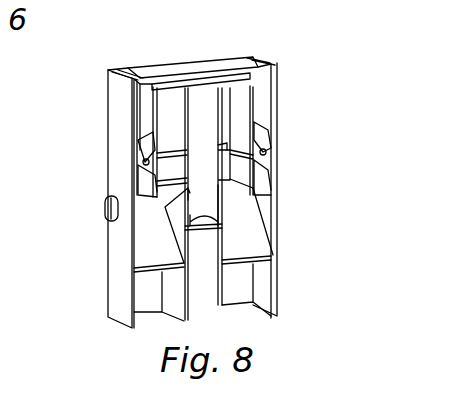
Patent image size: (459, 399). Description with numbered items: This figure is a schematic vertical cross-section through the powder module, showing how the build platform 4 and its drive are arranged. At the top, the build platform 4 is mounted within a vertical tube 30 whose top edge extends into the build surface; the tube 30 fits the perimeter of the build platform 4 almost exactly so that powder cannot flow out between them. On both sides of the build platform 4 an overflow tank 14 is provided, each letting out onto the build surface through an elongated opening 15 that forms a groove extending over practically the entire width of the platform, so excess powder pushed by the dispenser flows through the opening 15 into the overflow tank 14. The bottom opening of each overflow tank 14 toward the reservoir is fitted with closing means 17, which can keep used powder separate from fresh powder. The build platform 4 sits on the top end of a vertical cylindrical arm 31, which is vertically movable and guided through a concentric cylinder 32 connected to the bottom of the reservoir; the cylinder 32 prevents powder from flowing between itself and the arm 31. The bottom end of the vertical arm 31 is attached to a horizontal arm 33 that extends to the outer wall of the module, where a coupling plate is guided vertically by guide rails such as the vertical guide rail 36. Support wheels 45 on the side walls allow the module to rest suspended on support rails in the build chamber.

The build platform 4 is at (180, 72).
The overflow tank 14 is at (152, 122).
The opening 15 is at (127, 72).
The closing means 17 is at (266, 152).
The vertical tube 30 is at (238, 115).
The vertical cylindrical arm 31 is at (205, 162).
The concentric cylinder 32 is at (210, 250).
The horizontal arm 33 is at (218, 217).
The vertical guide rail 36 is at (140, 242).
The support wheels 45 is at (105, 200).